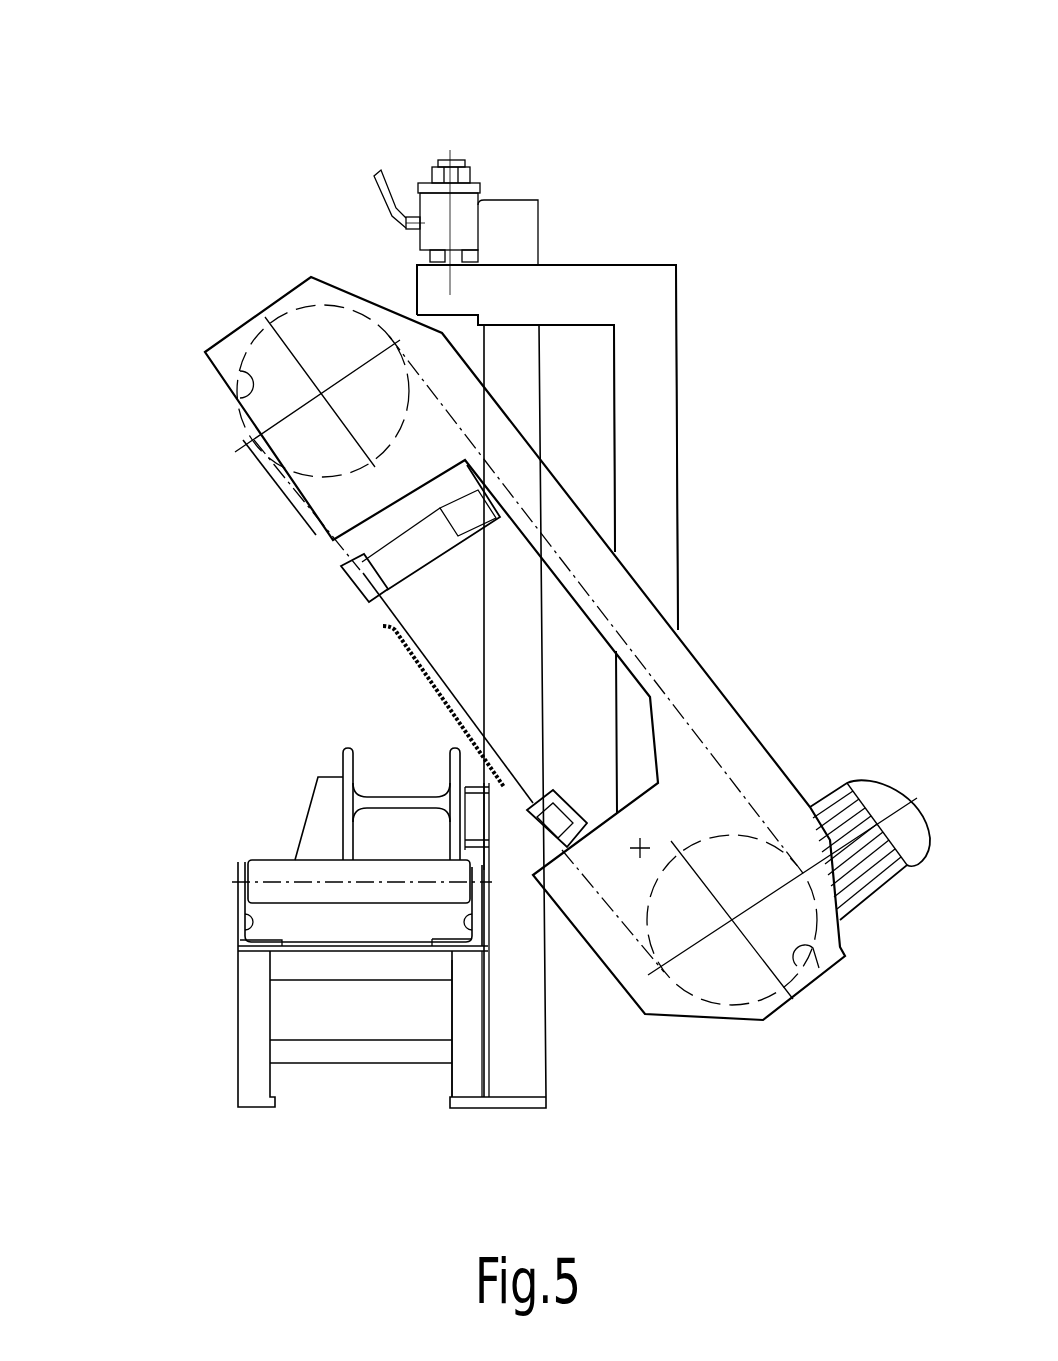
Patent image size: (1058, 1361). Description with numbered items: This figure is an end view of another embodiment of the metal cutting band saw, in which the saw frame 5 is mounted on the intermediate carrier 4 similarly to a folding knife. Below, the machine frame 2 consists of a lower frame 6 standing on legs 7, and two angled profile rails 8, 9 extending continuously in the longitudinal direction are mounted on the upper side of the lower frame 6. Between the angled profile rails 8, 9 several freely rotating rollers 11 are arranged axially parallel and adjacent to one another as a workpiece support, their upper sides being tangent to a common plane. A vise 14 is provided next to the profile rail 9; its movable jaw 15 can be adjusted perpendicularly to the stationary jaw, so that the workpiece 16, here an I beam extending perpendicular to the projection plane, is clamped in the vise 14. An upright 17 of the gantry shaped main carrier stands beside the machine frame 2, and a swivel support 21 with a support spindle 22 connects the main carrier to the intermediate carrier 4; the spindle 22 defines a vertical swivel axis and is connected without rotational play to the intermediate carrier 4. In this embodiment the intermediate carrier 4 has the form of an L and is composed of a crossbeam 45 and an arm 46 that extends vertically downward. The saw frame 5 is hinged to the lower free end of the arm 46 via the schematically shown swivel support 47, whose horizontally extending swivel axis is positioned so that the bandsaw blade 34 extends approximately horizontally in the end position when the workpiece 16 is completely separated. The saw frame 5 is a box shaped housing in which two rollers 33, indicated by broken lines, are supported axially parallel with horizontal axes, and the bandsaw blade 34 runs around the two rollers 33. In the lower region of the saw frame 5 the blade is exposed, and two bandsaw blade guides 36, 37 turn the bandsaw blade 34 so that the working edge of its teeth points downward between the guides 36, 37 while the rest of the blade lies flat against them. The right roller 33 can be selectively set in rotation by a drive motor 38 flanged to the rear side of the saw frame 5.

The machine frame 2 is at (336, 942).
The intermediate carrier 4 is at (611, 621).
The saw frame 5 is at (492, 744).
The lower frame 6 is at (337, 1073).
The legs 7 is at (468, 1068).
The angled profile rail 8 is at (237, 933).
The angled profile rail 9 is at (487, 938).
The rollers 11 is at (262, 865).
The vise 14 is at (322, 739).
The movable jaw 15 is at (320, 800).
The workpiece 16 is at (360, 772).
The upright 17 is at (518, 1040).
The swivel support 21 is at (393, 147).
The support spindle 22 is at (430, 257).
The rollers 33 is at (232, 407).
The bandsaw blade 34 is at (648, 666).
The bandsaw blade guide 36 is at (558, 790).
The bandsaw blade guide 37 is at (410, 563).
The drive motor 38 is at (836, 805).
The crossbeam 45 is at (560, 285).
The arm 46 is at (650, 500).
The swivel support 47 is at (652, 822).